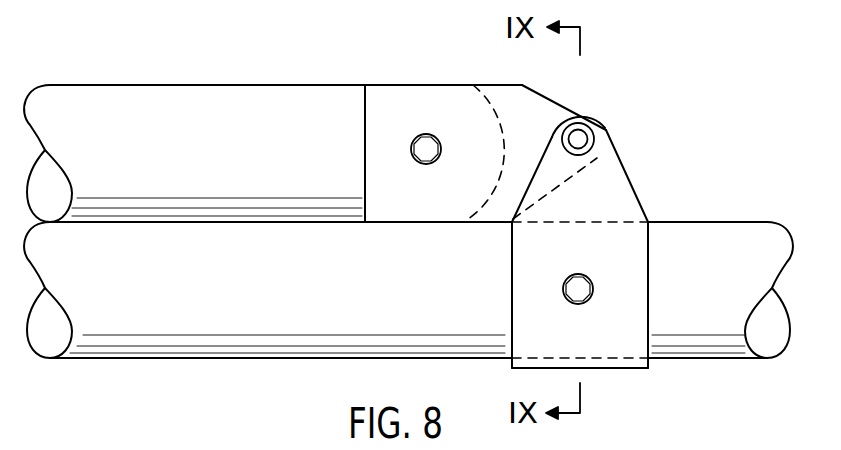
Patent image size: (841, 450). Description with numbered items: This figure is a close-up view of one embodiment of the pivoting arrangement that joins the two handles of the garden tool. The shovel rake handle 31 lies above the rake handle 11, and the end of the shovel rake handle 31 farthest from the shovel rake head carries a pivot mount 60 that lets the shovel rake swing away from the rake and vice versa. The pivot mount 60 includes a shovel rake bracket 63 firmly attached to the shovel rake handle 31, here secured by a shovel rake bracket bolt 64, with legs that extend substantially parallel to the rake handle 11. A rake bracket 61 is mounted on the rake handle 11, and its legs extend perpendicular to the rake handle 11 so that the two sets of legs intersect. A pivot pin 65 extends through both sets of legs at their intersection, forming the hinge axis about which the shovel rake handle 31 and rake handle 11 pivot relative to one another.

The rake handle 11 is at (211, 307).
The shovel rake handle 31 is at (212, 167).
The pivot mount 60 is at (630, 88).
The rake bracket 61 is at (632, 368).
The shovel rake bracket 63 is at (493, 85).
The shovel rake bracket bolt 64 is at (427, 134).
The pivot pin 65 is at (588, 135).